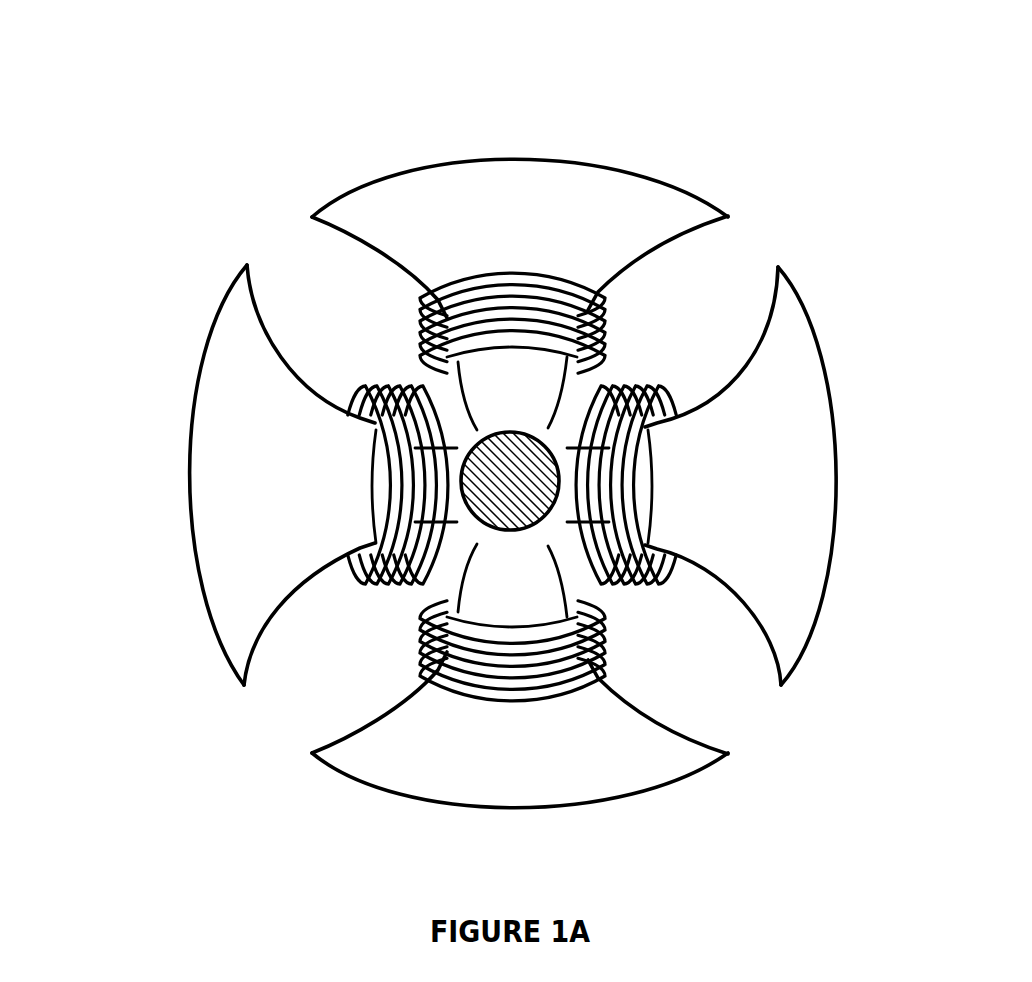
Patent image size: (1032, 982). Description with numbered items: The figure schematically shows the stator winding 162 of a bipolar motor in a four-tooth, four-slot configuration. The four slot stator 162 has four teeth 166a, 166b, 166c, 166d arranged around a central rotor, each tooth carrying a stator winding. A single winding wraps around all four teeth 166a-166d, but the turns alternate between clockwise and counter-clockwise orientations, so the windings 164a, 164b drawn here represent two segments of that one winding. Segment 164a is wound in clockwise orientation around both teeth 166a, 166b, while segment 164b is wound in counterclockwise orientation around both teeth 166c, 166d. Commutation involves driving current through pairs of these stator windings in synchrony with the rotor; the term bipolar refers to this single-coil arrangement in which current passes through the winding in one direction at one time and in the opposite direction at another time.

The stator winding 162 is at (729, 114).
The winding segment 164a is at (601, 641).
The winding segment 164b is at (583, 560).
The stator tooth 166a is at (457, 165).
The stator tooth 166b is at (358, 781).
The stator tooth 166c is at (225, 286).
The stator tooth 166d is at (813, 304).